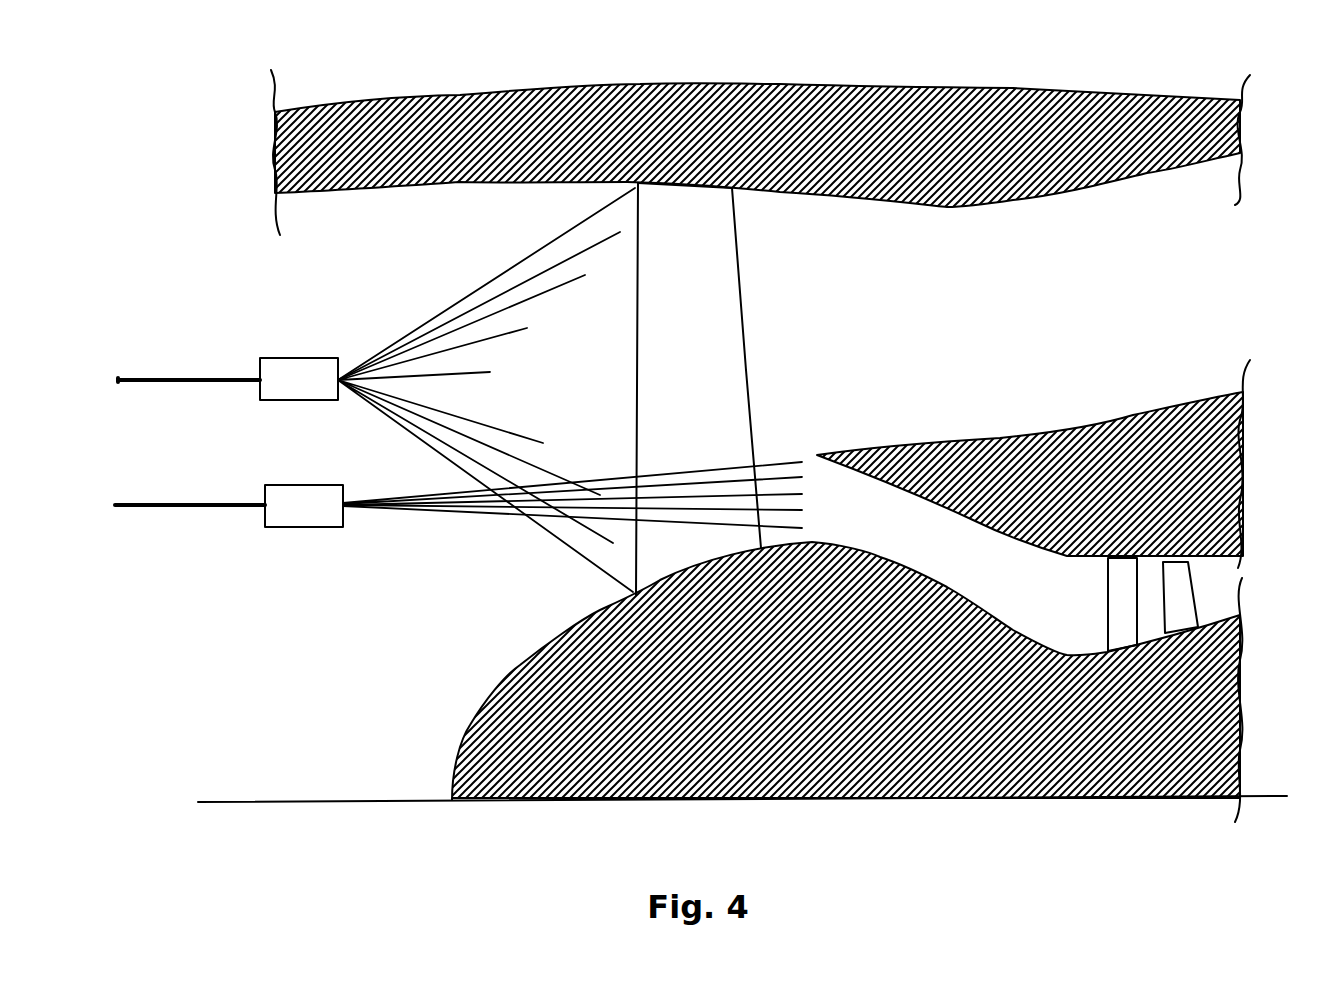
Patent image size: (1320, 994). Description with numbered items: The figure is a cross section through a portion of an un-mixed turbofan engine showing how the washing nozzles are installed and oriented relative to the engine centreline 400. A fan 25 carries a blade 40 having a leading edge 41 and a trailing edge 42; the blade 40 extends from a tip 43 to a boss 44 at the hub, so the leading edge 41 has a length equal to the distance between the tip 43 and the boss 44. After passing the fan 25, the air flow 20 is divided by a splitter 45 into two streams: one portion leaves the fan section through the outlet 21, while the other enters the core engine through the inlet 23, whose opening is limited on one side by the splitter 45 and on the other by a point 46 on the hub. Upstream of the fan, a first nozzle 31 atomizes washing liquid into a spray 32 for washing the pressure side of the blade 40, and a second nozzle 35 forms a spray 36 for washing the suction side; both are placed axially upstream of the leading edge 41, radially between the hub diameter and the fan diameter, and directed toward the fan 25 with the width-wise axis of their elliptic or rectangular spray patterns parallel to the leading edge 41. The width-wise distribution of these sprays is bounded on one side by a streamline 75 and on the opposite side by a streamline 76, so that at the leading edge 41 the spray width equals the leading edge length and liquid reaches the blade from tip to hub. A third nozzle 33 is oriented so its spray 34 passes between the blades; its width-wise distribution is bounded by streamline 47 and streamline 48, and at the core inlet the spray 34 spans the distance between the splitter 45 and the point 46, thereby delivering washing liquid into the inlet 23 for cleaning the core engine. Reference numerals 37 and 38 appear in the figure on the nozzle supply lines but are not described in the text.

The air flow 20 is at (207, 667).
The outlet 21 is at (1217, 262).
The inlet 23 is at (952, 552).
The fan 25 is at (698, 247).
The nozzle 31 is at (273, 363).
The spray 32 is at (395, 343).
The nozzle 33 is at (293, 500).
The spray 34 is at (418, 513).
The nozzle 35 is at (297, 373).
The spray 36 is at (427, 320).
The first fiber end 37 is at (150, 385).
The second optical fiber 38 is at (148, 508).
The blade 40 is at (687, 303).
The leading edge 41 is at (637, 362).
The trailing edge 42 is at (750, 373).
The tip 43 is at (577, 185).
The boss 44 is at (632, 592).
The splitter 45 is at (815, 453).
The point on the hub 46 is at (812, 537).
The streamline 47 is at (618, 478).
The streamline 48 is at (458, 513).
The streamline 75 is at (512, 265).
The streamline 76 is at (410, 435).
The engine centreline 400 is at (285, 800).